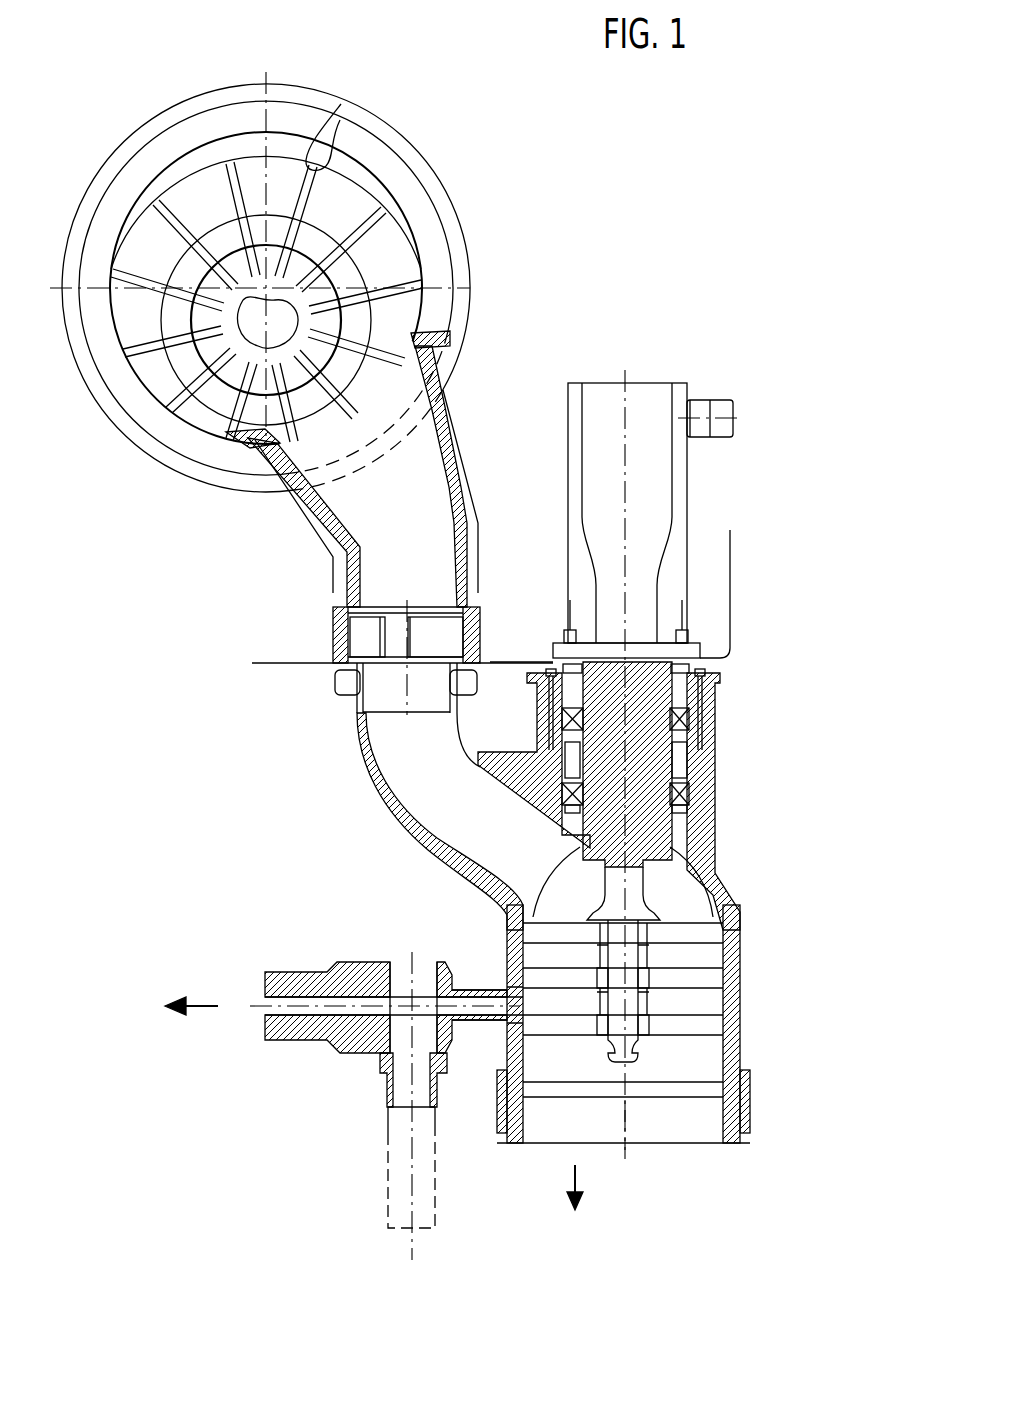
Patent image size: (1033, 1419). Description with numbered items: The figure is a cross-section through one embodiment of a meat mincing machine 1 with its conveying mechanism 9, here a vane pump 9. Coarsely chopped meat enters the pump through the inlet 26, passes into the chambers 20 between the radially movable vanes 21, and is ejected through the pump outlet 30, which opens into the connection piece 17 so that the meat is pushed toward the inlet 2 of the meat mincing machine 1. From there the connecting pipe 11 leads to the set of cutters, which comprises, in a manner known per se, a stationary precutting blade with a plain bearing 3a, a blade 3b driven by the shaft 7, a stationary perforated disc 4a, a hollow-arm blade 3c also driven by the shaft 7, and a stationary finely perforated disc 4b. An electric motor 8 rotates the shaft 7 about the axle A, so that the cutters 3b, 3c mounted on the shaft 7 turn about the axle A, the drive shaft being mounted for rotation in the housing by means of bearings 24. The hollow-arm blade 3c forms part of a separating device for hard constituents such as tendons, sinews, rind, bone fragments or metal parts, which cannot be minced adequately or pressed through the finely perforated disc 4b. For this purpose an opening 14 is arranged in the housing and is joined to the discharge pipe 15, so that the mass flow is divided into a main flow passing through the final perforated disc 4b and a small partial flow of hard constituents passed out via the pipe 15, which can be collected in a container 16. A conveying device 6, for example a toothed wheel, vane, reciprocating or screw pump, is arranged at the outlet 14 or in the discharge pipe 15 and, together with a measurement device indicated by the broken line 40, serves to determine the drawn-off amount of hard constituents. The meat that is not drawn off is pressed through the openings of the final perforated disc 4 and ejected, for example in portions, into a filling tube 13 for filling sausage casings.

The meat mincing machine 1 is at (326, 786).
The inlet 2 is at (350, 718).
The precutting blade with plain bearing 3a is at (707, 933).
The blade 3b is at (707, 955).
The hollow-arm blade 3c is at (707, 1002).
The perforated disc 4 is at (682, 1030).
The stationary perforated disc 4a is at (707, 978).
The stationary finely perforated disc 4b is at (707, 1027).
The conveying device 6 is at (397, 960).
The shaft 7 is at (633, 1017).
The electric motor 8 is at (658, 485).
The conveying mechanism 9 is at (443, 187).
The connecting pipe 11 is at (397, 830).
The filling tube 13 is at (564, 1186).
The opening 14 is at (510, 990).
The discharge pipe 15 is at (482, 1017).
The container 16 is at (342, 1007).
The connection piece 17 is at (305, 533).
The chambers 20 is at (338, 232).
The radially movable vanes 21 is at (320, 128).
The bearings 24 is at (713, 717).
The inlet 26 is at (183, 167).
The pump outlet 30 is at (437, 397).
The measurement device 40 is at (390, 1123).
The axle A is at (622, 1146).